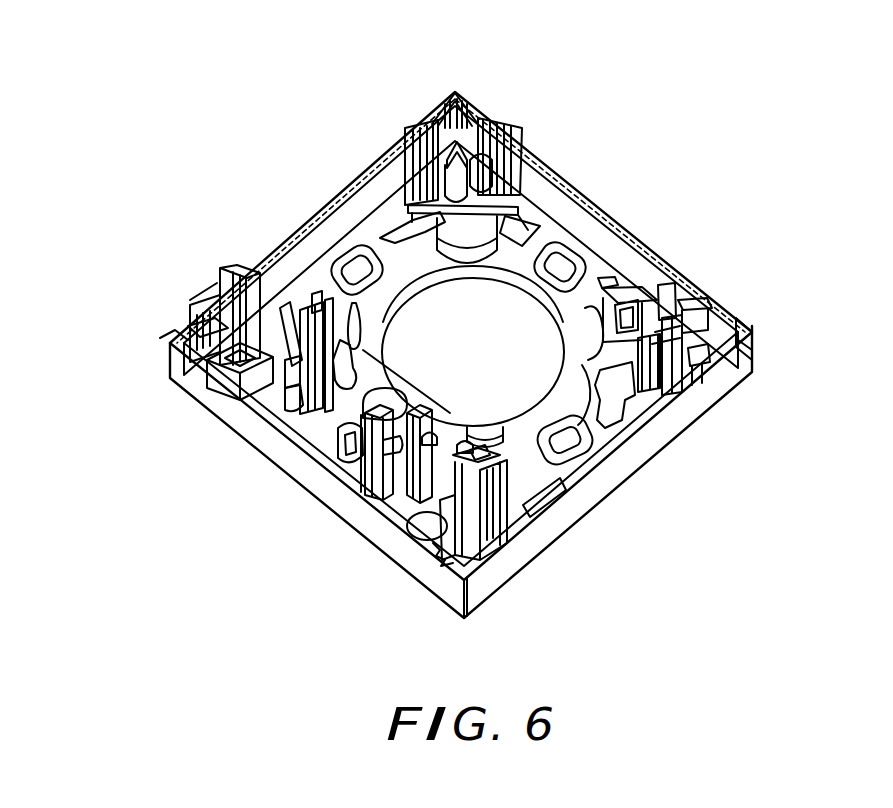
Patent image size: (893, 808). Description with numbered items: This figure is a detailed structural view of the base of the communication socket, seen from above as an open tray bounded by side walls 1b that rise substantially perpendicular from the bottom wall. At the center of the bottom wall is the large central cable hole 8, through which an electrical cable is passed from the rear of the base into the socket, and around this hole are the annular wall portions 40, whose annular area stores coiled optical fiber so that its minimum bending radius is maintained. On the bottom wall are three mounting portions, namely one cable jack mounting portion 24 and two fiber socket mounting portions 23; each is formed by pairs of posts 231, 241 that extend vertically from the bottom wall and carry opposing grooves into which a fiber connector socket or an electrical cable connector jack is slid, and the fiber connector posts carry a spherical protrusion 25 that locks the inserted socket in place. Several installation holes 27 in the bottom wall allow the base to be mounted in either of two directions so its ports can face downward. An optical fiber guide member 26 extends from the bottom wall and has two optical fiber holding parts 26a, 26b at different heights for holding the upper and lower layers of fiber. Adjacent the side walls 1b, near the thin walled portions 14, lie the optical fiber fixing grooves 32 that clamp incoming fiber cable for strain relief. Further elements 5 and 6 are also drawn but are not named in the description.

The side walls 1b is at (685, 418).
The insulating block 5 is at (227, 316).
The terminal post 6 is at (312, 300).
The central cable hole 8 is at (500, 326).
The thin walled portions 14 is at (478, 92).
The fiber socket mounting portion 23 is at (262, 364).
The cable jack mounting portion 24 is at (300, 448).
The spherical protrusion 25 is at (240, 272).
The optical fiber guide member 26 is at (690, 278).
The optical fiber holding part 26a is at (428, 122).
The optical fiber holding part 26b is at (510, 120).
The installation holes 27 is at (347, 247).
The optical fiber fixing grooves 32 is at (652, 344).
The annular wall portions 40 is at (447, 232).
The post 231 is at (168, 335).
The post 241 is at (292, 408).